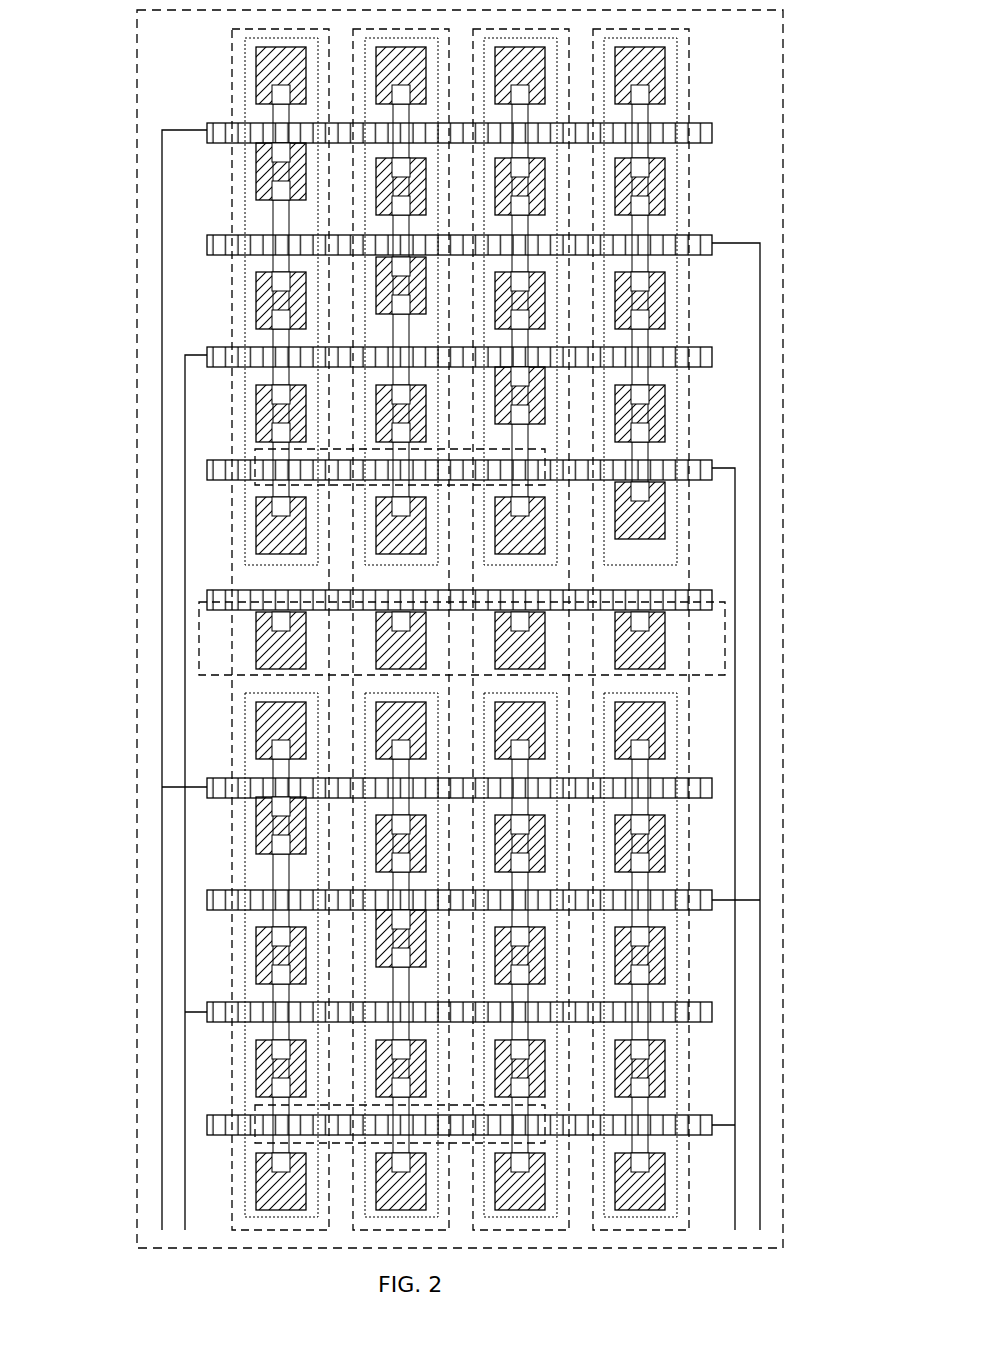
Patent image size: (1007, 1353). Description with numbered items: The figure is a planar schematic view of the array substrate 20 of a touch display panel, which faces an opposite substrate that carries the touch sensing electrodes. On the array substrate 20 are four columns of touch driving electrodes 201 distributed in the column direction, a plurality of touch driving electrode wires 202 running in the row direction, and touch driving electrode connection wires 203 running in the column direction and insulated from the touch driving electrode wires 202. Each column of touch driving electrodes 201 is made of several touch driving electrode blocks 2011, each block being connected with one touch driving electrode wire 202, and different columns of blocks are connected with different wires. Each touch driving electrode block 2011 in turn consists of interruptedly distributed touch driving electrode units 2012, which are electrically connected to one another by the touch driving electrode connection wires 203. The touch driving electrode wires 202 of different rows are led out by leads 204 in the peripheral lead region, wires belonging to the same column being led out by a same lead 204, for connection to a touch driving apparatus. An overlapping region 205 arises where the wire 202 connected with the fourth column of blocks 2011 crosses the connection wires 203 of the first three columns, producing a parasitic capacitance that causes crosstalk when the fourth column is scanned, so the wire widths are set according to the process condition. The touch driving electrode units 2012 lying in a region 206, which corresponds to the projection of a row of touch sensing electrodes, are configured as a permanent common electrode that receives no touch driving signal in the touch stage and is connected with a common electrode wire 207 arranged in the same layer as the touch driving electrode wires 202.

The array substrate 20 is at (783, 60).
The touch driving electrode 201 is at (232, 42).
The touch driving electrode block 2011 is at (245, 267).
The touch driving electrode unit 2012 is at (257, 417).
The touch driving electrode wire 202 is at (219, 232).
The touch driving electrode connection wire 203 is at (270, 362).
The lead 204 is at (160, 703).
The overlapping region 205 is at (255, 483).
The region 206 is at (725, 647).
The common electrode wire 207 is at (707, 590).